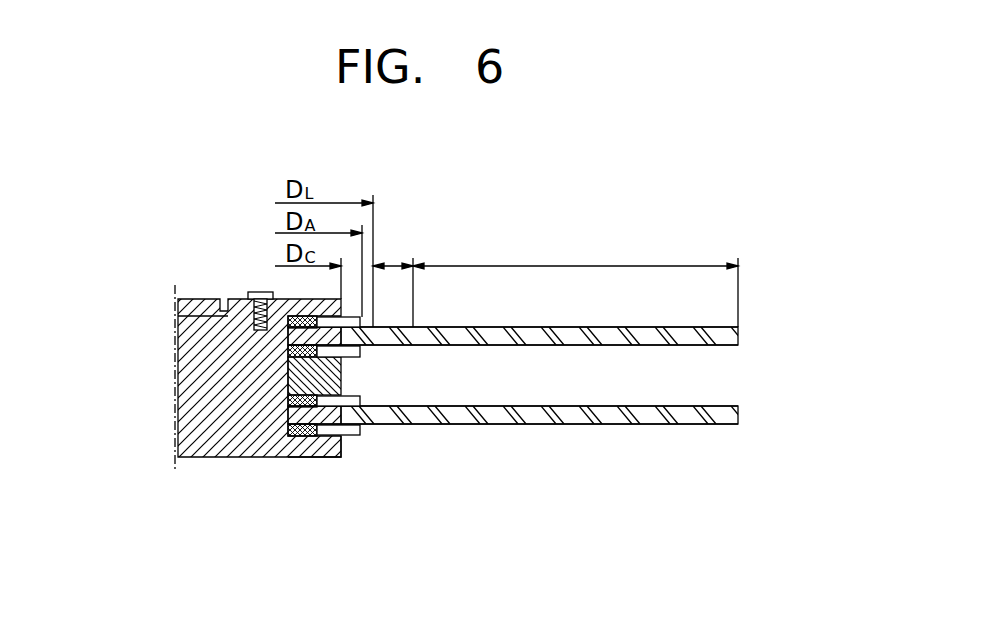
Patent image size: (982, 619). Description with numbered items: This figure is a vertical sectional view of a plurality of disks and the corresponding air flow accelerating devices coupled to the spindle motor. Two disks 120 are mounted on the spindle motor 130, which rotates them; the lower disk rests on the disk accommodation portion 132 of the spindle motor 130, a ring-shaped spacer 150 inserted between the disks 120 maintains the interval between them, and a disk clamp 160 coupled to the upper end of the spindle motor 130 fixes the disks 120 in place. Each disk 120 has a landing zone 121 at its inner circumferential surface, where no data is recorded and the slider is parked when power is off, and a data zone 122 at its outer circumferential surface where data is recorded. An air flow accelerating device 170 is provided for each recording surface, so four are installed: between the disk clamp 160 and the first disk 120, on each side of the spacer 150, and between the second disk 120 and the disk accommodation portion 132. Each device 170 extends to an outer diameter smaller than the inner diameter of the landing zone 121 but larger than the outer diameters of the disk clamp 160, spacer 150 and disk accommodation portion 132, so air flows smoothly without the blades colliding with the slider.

The disk 120 is at (738, 424).
The landing zone 121 is at (397, 263).
The data zone 122 is at (579, 265).
The spindle motor 130 is at (208, 433).
The disk accommodation portion 132 is at (325, 452).
The spacer 150 is at (288, 373).
The disk clamp 160 is at (222, 311).
The air flow accelerating device 170 is at (357, 322).